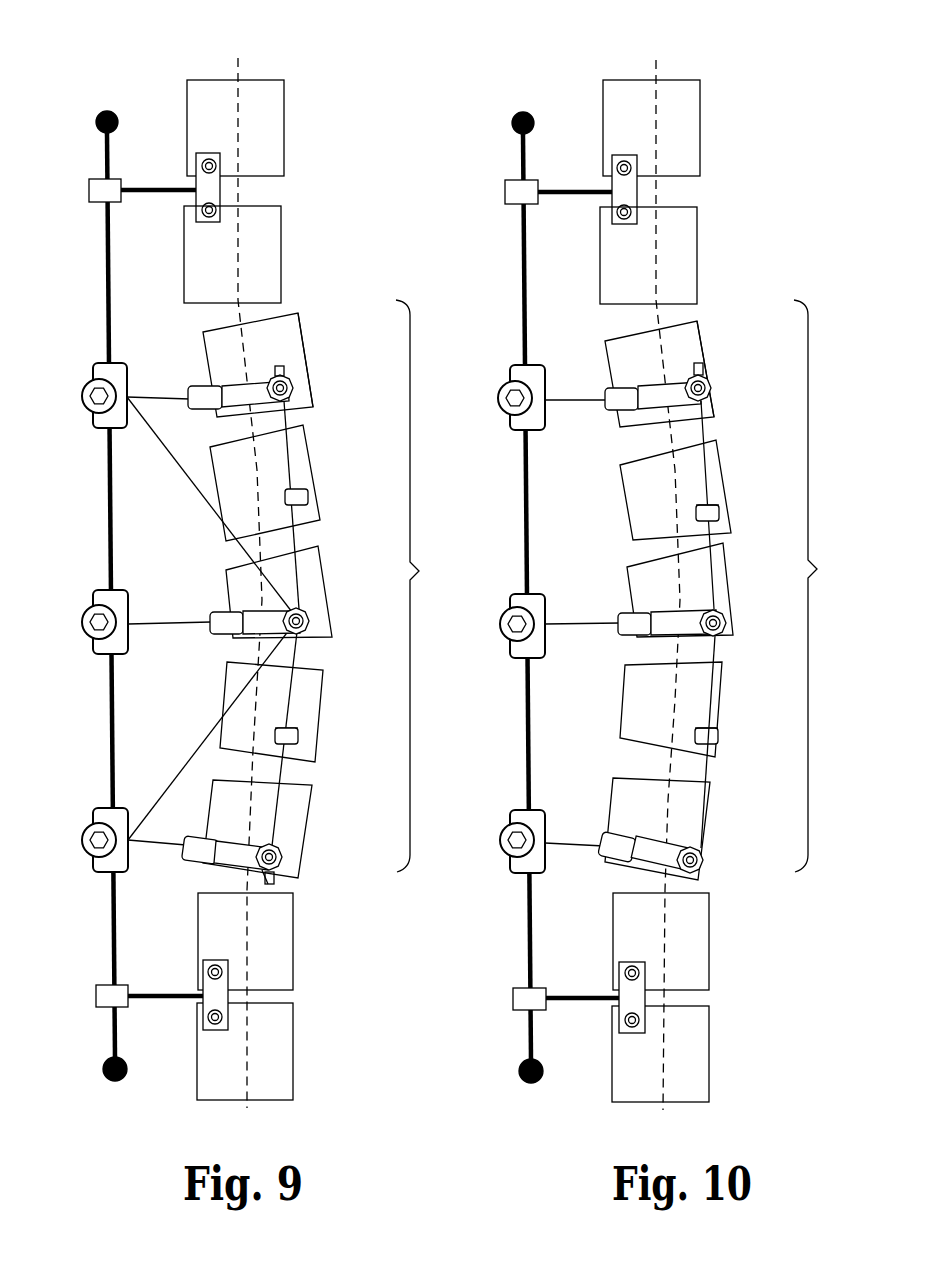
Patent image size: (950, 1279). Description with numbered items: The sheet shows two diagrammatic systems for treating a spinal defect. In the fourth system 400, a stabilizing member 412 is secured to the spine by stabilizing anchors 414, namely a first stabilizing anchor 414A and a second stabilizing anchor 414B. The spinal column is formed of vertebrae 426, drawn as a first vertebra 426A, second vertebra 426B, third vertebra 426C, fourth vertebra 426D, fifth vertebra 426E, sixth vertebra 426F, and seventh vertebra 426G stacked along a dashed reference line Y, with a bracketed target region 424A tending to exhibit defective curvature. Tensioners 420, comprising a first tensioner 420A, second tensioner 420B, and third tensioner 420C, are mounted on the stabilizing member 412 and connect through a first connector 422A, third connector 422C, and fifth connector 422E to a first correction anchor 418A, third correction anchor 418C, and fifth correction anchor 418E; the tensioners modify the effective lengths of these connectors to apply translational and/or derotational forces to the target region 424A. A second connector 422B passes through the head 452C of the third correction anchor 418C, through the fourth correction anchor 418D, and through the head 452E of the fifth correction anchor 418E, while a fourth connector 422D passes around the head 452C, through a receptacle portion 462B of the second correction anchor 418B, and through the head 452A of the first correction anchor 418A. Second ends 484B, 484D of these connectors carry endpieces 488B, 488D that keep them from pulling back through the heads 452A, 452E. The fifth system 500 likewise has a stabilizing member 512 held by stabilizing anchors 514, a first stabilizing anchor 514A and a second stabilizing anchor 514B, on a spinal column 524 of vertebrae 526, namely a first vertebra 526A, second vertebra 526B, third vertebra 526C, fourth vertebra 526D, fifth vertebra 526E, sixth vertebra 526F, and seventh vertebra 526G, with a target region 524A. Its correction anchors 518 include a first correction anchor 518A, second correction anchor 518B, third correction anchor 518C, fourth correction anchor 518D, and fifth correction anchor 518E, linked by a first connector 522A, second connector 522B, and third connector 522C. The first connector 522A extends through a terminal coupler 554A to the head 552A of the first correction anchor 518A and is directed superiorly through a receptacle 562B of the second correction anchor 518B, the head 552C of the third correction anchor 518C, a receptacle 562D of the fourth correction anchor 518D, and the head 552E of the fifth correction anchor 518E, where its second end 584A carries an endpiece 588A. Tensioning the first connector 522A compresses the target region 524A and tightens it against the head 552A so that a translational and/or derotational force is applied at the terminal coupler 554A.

In FIG. 9, the fourth system 400 is at (91, 78).
In FIG. 9, the stabilizing member 412 is at (104, 270).
In FIG. 9, the stabilizing anchors 414 is at (86, 174).
In FIG. 9, the first stabilizing anchor 414A is at (107, 985).
In FIG. 9, the second stabilizing anchor 414B is at (99, 193).
In FIG. 9, the tensioners 420 is at (80, 385).
In FIG. 9, the first tensioner 420A is at (100, 813).
In FIG. 9, the second tensioner 420B is at (100, 652).
In FIG. 9, the third tensioner 420C is at (104, 428).
In FIG. 9, the first connector 422A is at (157, 847).
In FIG. 9, the second connector 422B is at (167, 795).
In FIG. 9, the third connector 422C is at (167, 628).
In FIG. 9, the fourth connector 422D is at (157, 432).
In FIG. 9, the fifth connector 422E is at (178, 397).
In FIG. 9, the first correction anchor 418A is at (247, 870).
In FIG. 9, the second correction anchor 418B is at (298, 744).
In FIG. 9, the third correction anchor 418C is at (250, 618).
In FIG. 9, the fourth correction anchor 418D is at (309, 497).
In FIG. 9, the fifth correction anchor 418E is at (247, 378).
In FIG. 9, the target region 424A is at (438, 586).
In FIG. 9, the vertebrae 426 is at (299, 118).
In FIG. 9, the first vertebra 426A is at (273, 958).
In FIG. 9, the second vertebra 426B is at (268, 245).
In FIG. 9, the third vertebra 426C is at (291, 837).
In FIG. 9, the fourth vertebra 426D is at (297, 447).
In FIG. 9, the fifth vertebra 426E is at (315, 571).
In FIG. 9, the sixth vertebra 426F is at (305, 471).
In FIG. 9, the seventh vertebra 426G is at (290, 348).
In FIG. 9, the head of first correction anchor 452A is at (285, 868).
In FIG. 9, the head of third correction anchor 452C is at (306, 622).
In FIG. 9, the head of fifth correction anchor 452E is at (296, 390).
In FIG. 9, the receptacle portion of second correction anchor 462B is at (277, 728).
In FIG. 9, the second end of second connector 484B is at (300, 336).
In FIG. 9, the second end of fourth connector 484D is at (280, 886).
In FIG. 9, the endpiece 488B is at (284, 368).
In FIG. 9, the endpiece 488D is at (253, 881).
In FIG. 9, the axis Y is at (247, 1108).
In FIG. 10, the axis Y is at (663, 1108).
In FIG. 10, the fifth system 500 is at (555, 82).
In FIG. 10, the stabilizing member 512 is at (520, 267).
In FIG. 10, the stabilizing anchors 514 is at (496, 200).
In FIG. 10, the first stabilizing anchor 514A is at (517, 992).
In FIG. 10, the second stabilizing anchor 514B is at (504, 193).
In FIG. 10, the correction anchors 518 is at (492, 373).
In FIG. 10, the first correction anchor 518A is at (520, 865).
In FIG. 10, the second correction anchor 518B is at (517, 646).
In FIG. 10, the third correction anchor 518C is at (518, 420).
In FIG. 10, the fourth correction anchor 518D is at (720, 513).
In FIG. 10, the fifth correction anchor 518E is at (662, 390).
In FIG. 10, the first connector 522A is at (704, 425).
In FIG. 10, the second connector 522B is at (583, 622).
In FIG. 10, the third connector 522C is at (580, 397).
In FIG. 10, the spinal column 524 is at (728, 70).
In FIG. 10, the target region 524A is at (838, 586).
In FIG. 10, the vertebrae 526 is at (713, 117).
In FIG. 10, the first vertebra 526A is at (690, 966).
In FIG. 10, the second vertebra 526B is at (685, 247).
In FIG. 10, the third vertebra 526C is at (690, 818).
In FIG. 10, the fourth vertebra 526D is at (714, 690).
In FIG. 10, the fifth vertebra 526E is at (722, 598).
In FIG. 10, the sixth vertebra 526F is at (713, 473).
In FIG. 10, the seventh vertebra 526G is at (697, 352).
In FIG. 10, the head of first correction anchor 552A is at (703, 862).
In FIG. 10, the head of third correction anchor 552C is at (727, 622).
In FIG. 10, the head of fifth correction anchor 552E is at (712, 388).
In FIG. 10, the terminal coupler 554A is at (594, 862).
In FIG. 10, the receptacle of second correction anchor 562B is at (697, 733).
In FIG. 10, the cable 562D is at (700, 507).
In FIG. 10, the second end of first connector 584A is at (683, 348).
In FIG. 10, the endpiece 588A is at (705, 368).